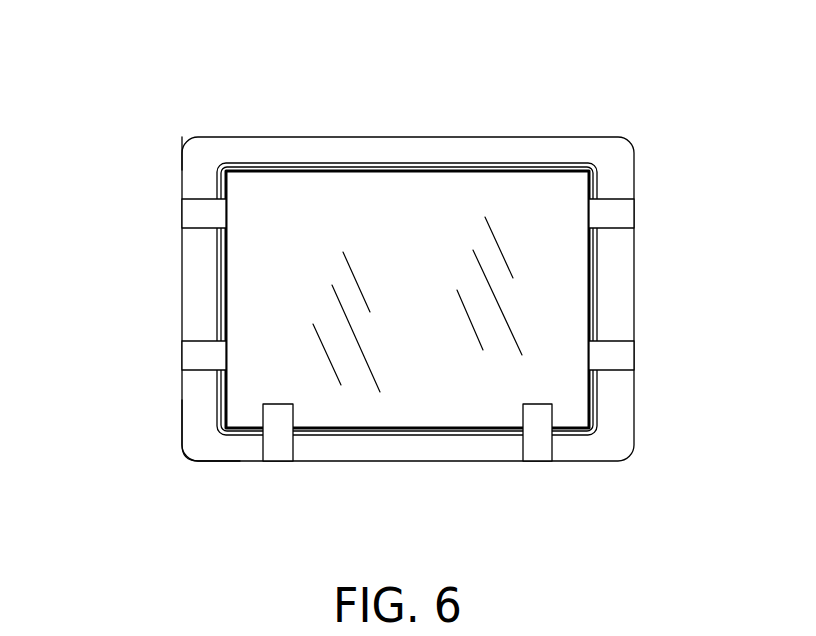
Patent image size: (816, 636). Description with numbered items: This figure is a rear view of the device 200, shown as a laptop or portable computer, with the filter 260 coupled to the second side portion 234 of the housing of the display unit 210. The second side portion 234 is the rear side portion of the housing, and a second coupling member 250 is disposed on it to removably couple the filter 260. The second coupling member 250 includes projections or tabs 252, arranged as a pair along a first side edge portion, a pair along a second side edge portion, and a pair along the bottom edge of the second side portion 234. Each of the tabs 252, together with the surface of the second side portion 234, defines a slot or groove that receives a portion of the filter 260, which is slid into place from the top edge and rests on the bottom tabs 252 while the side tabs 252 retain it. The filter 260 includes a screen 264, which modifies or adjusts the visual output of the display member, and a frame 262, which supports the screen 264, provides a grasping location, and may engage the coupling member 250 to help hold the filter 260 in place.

The device 200 is at (182, 110).
The display unit 210 is at (298, 138).
The second side portion 234 is at (515, 153).
The second coupling member 250 is at (176, 484).
The projections or tabs 252 is at (197, 215).
The filter 260 is at (572, 279).
The frame 262 is at (598, 307).
The screen 264 is at (565, 407).